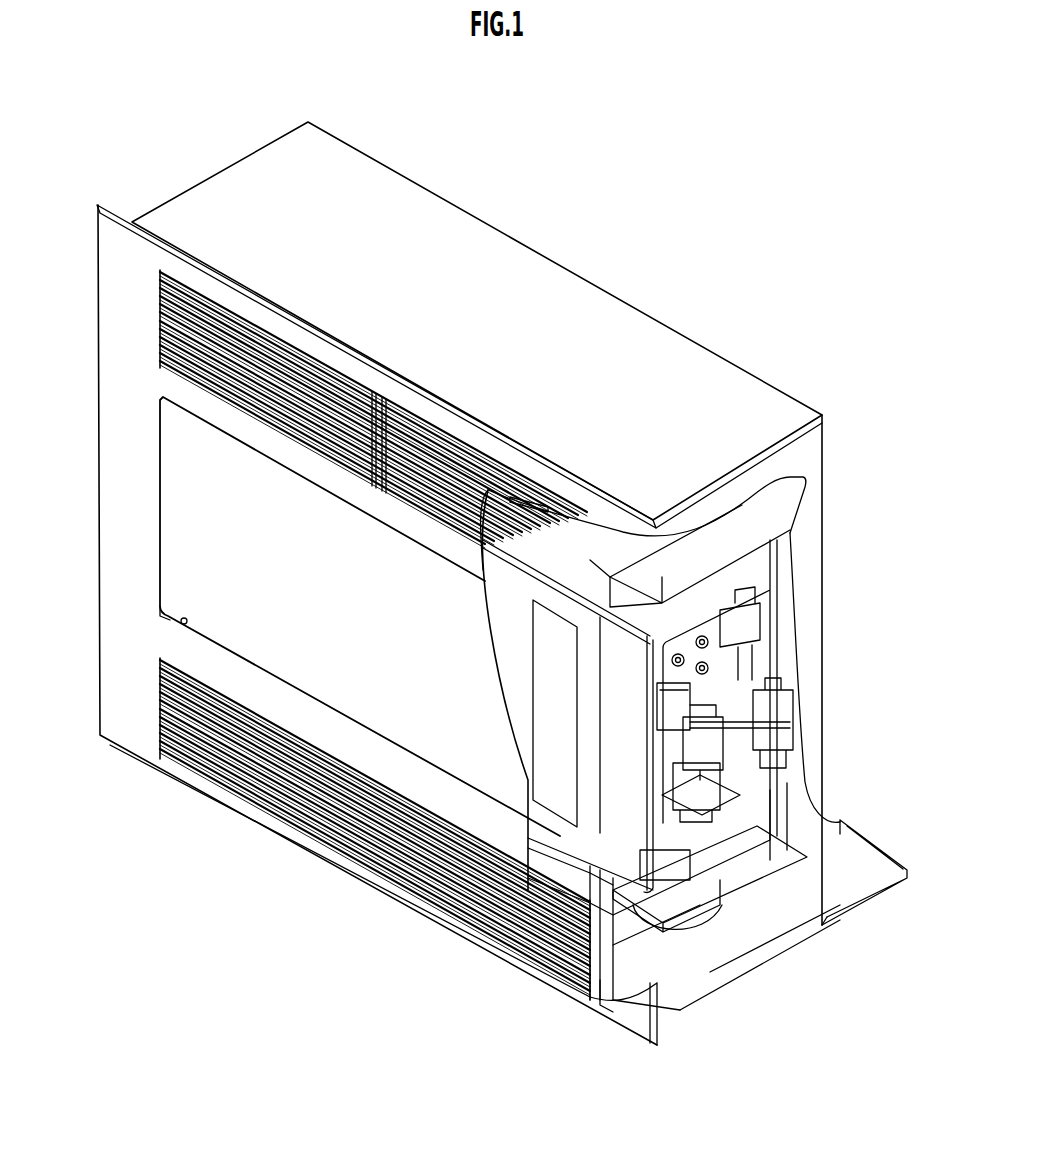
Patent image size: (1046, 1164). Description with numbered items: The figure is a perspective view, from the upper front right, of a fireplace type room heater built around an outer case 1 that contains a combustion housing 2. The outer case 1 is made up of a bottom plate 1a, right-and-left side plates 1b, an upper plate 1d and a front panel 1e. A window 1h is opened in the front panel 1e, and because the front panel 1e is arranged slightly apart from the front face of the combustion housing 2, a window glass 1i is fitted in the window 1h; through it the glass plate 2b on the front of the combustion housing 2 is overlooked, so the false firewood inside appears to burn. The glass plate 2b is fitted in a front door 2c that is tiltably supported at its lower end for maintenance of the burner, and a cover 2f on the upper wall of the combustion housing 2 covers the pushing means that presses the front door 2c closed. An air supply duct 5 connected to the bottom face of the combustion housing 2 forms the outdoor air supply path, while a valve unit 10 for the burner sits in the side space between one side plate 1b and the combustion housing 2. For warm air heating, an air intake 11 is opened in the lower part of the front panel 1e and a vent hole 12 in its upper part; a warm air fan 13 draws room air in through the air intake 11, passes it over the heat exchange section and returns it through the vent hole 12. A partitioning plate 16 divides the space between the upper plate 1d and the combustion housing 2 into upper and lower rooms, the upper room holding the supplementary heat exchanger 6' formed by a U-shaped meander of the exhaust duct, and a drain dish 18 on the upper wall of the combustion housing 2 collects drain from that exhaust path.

The outer case 1 is at (442, 183).
The bottom plate 1a is at (876, 869).
The side plate 1b is at (813, 538).
The upper plate 1d is at (676, 346).
The front panel 1e is at (99, 471).
The window 1h is at (178, 622).
The window glass 1i is at (177, 556).
The combustion housing 2 is at (712, 593).
The glass plate 2b is at (560, 783).
The front door 2c is at (627, 857).
The cover 2f is at (570, 578).
The air supply duct 5 is at (697, 927).
The supplementary heat exchanger 6' is at (672, 523).
The valve unit 10 is at (787, 684).
The air intake 11 is at (310, 814).
The vent hole 12 is at (159, 338).
The warm air fan 13 is at (700, 850).
The partitioning plate 16 is at (598, 553).
The drain dish 18 is at (527, 545).